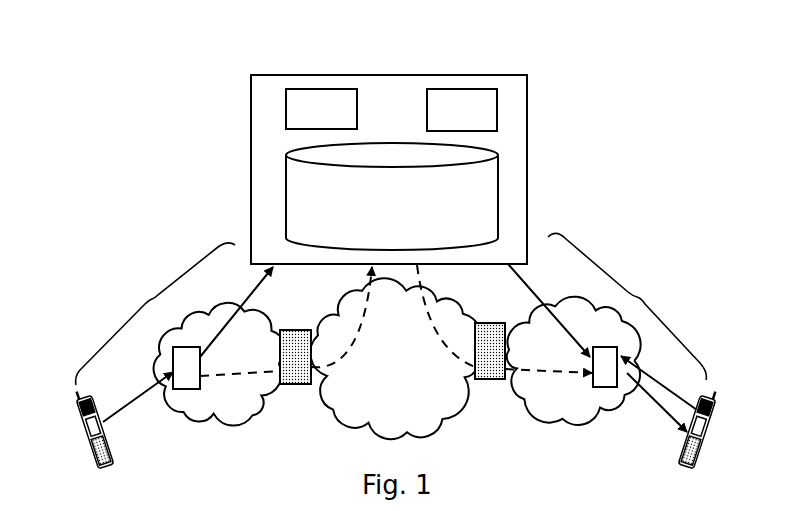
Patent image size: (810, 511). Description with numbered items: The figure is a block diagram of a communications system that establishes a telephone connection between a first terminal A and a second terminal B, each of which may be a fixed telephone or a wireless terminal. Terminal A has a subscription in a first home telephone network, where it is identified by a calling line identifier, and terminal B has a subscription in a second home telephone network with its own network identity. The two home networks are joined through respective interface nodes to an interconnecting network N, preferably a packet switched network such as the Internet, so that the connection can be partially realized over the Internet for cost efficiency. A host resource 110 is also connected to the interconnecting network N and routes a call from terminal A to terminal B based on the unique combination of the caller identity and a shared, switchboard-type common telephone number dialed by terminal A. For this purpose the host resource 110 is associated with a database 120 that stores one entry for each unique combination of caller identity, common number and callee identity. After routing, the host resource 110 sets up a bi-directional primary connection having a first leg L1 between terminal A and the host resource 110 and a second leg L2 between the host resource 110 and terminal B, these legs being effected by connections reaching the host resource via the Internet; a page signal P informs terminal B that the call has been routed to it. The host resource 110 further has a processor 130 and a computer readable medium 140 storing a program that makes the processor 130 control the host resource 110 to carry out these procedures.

The host resource 110 is at (296, 51).
The database 120 is at (341, 196).
The processor 130 is at (265, 108).
The computer readable medium 140 is at (523, 107).
The interconnecting network N is at (395, 358).
The first leg L1 is at (155, 314).
The second leg L2 is at (627, 306).
The first terminal A is at (65, 431).
The second terminal B is at (720, 433).
The page signal P is at (657, 410).